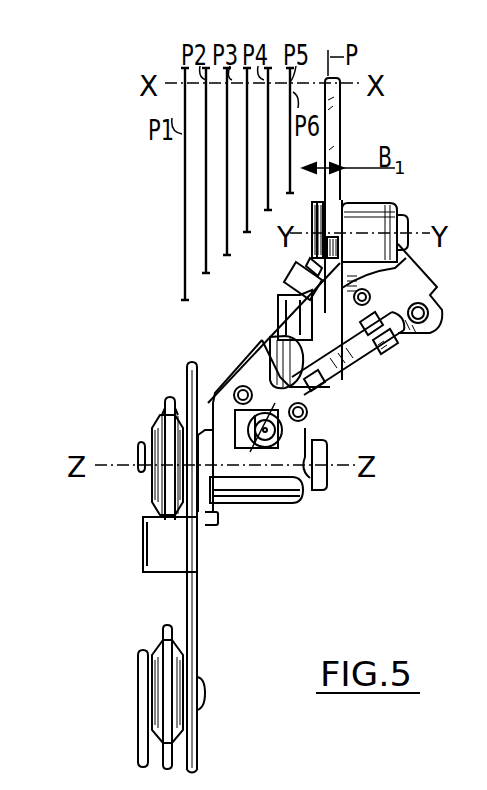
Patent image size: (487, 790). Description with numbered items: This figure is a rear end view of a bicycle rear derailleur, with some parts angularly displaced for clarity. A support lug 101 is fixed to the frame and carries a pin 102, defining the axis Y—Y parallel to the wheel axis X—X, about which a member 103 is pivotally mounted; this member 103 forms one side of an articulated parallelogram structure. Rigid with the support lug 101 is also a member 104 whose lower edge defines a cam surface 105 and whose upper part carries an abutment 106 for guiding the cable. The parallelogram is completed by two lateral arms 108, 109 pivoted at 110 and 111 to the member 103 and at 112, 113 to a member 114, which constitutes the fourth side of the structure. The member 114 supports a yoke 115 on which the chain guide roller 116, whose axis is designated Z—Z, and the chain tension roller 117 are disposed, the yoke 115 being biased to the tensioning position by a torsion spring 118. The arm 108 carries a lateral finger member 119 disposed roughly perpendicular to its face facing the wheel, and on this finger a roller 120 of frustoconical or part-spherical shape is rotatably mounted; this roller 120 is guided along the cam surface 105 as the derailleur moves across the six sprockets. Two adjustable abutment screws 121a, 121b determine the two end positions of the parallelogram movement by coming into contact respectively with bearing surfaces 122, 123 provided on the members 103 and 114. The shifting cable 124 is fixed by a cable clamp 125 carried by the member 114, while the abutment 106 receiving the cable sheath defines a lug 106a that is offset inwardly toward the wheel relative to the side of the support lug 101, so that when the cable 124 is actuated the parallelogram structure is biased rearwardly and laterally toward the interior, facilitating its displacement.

The support lug 101 is at (341, 128).
The pin 102 is at (312, 243).
The pivotally mounted member 103 is at (410, 238).
The cam member 104 is at (324, 205).
The cam surface 105 is at (326, 250).
The cable abutment 106 is at (270, 320).
The lug 106a is at (268, 336).
The lateral arm 108 is at (325, 398).
The lateral arm 109 is at (368, 375).
The pivot 110 is at (410, 268).
The pivot 111 is at (429, 312).
The pivot 112 is at (251, 446).
The pivot 113 is at (300, 422).
The fourth side member 114 is at (298, 504).
The yoke 115 is at (197, 635).
The chain guide roller 116 is at (160, 485).
The chain tension roller 117 is at (156, 680).
The torsion spring 118 is at (210, 480).
The lateral finger member 119 is at (312, 268).
The roller 120 is at (369, 235).
The adjustable abutment screw 121a is at (366, 402).
The adjustable abutment screw 121b is at (398, 343).
The bearing surface 122 is at (371, 297).
The bearing surface 123 is at (267, 360).
The cable 124 is at (253, 380).
The cable clamp 125 is at (237, 420).